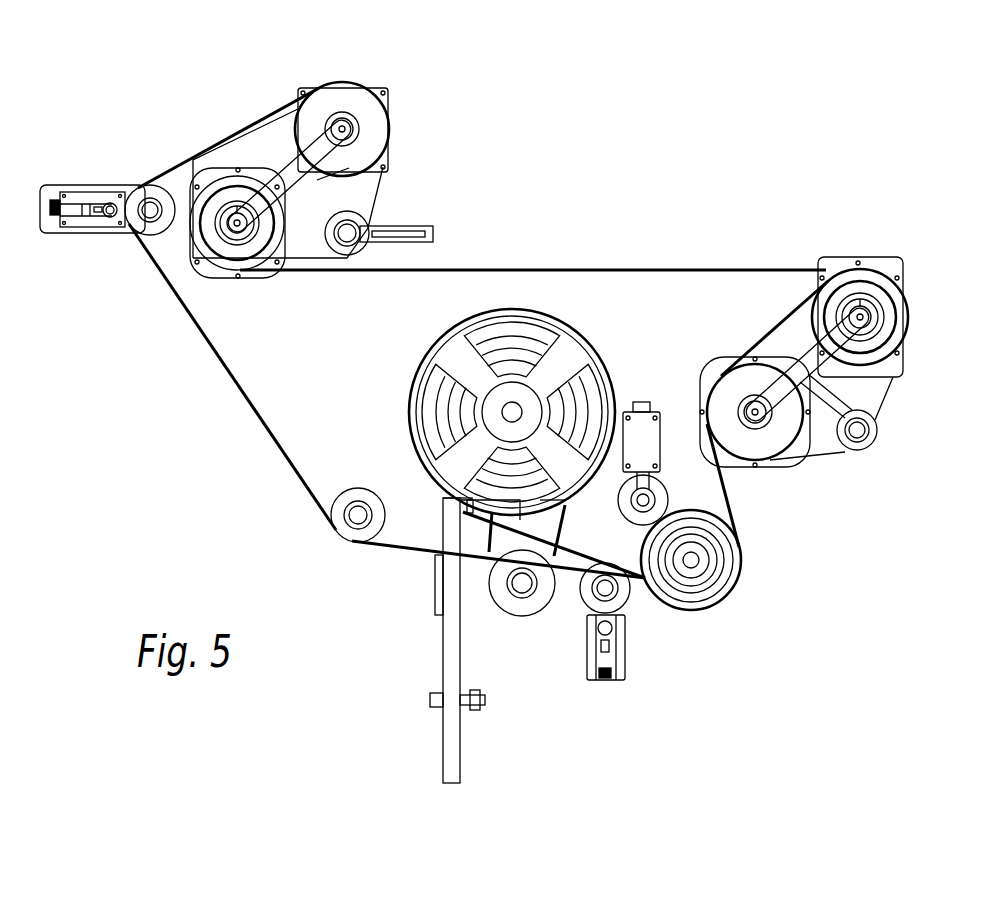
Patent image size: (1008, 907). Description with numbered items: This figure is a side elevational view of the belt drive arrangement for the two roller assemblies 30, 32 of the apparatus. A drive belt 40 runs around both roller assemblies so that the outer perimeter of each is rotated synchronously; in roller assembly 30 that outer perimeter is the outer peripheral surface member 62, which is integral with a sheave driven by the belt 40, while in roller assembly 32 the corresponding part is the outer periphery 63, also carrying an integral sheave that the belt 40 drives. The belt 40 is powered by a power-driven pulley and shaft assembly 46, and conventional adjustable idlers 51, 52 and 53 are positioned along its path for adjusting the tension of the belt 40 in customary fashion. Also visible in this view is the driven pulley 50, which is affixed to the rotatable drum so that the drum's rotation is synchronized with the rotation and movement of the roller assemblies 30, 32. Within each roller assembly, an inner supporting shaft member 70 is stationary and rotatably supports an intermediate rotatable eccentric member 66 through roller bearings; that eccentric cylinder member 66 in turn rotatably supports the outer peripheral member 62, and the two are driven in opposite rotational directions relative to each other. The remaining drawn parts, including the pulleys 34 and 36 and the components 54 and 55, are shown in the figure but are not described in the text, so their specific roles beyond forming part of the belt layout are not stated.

The roller assembly 30 is at (257, 263).
The roller assembly 32 is at (863, 278).
The first idler pulley 34 is at (346, 93).
The second idler pulley 36 is at (765, 440).
The drive belt 40 is at (647, 268).
The power-driven pulley and shaft assembly 46 is at (695, 575).
The driven pulley 50 is at (567, 358).
The adjustable idler 51 is at (150, 186).
The adjustable idler 52 is at (358, 538).
The adjustable idler 53 is at (622, 588).
The tensioner pulley 54 is at (658, 499).
The pivot pulley 55 is at (356, 220).
The outer peripheral surface member 62 is at (220, 237).
The outer periphery 63 is at (877, 353).
The intermediate rotatable eccentric member 66 is at (217, 207).
The inner supporting shaft member 70 is at (224, 233).